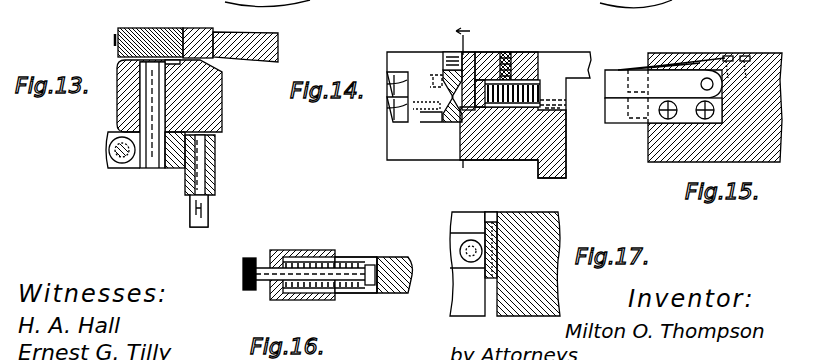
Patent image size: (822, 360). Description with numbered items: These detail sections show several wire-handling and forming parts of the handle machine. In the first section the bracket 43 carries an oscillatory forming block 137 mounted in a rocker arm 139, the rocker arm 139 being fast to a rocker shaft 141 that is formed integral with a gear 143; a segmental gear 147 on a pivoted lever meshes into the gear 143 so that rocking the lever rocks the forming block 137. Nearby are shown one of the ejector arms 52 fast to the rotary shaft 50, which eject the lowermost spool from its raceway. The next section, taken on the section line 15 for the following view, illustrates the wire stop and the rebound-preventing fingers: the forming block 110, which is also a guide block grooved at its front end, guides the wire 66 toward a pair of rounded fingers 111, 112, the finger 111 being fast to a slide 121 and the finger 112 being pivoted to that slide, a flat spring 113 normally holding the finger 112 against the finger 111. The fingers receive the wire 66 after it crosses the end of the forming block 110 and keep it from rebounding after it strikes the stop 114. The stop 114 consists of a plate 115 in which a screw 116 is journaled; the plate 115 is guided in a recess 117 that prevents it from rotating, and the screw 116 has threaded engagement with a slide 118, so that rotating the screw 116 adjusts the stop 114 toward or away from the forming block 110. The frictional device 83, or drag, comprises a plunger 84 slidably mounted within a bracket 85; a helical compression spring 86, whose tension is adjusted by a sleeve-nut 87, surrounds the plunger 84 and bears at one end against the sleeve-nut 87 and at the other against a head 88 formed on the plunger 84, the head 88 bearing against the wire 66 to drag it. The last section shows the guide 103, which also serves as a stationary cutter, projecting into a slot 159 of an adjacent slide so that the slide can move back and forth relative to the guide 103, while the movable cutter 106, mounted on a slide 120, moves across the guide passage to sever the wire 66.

In FIG. 13, the gear 143 is at (118, 40).
In FIG. 13, the segmental gear 147 is at (216, 57).
In FIG. 13, the bracket 43 is at (118, 112).
In FIG. 13, the rocker shaft 141 is at (147, 162).
In FIG. 13, the rocker arm 139 is at (173, 172).
In FIG. 13, the oscillatory forming block 137 is at (205, 211).
In FIG. 14, the ejector arm 52 is at (304, 0).
In FIG. 14, the section line 15 is at (461, 96).
In FIG. 14, the forming block 110 is at (397, 120).
In FIG. 14, the finger 111 is at (447, 124).
In FIG. 15, the finger 111 is at (614, 118).
In FIG. 14, the finger 112 is at (446, 72).
In FIG. 15, the finger 112 is at (613, 76).
In FIG. 14, the flat spring 113 is at (452, 52).
In FIG. 15, the flat spring 113 is at (668, 68).
In FIG. 14, the recess 117 is at (470, 54).
In FIG. 14, the stop 114 is at (546, 46).
In FIG. 14, the plate 115 is at (487, 52).
In FIG. 14, the screw 116 is at (540, 90).
In FIG. 14, the slide 118 is at (482, 150).
In FIG. 15, the rotary shaft 50 is at (674, 0).
In FIG. 15, the slide 121 is at (665, 155).
In FIG. 16, the sleeve-nut 87 is at (277, 250).
In FIG. 16, the helical compression spring 86 is at (310, 252).
In FIG. 16, the frictional device 83 is at (356, 261).
In FIG. 16, the bracket 85 is at (400, 258).
In FIG. 16, the plunger 84 is at (267, 282).
In FIG. 16, the head 88 is at (370, 294).
In FIG. 16, the wire 66 is at (392, 294).
In FIG. 17, the wire 66 is at (490, 214).
In FIG. 17, the slide 120 is at (560, 215).
In FIG. 17, the slot 159 is at (463, 225).
In FIG. 17, the guide 103 is at (472, 263).
In FIG. 17, the movable cutter 106 is at (500, 228).